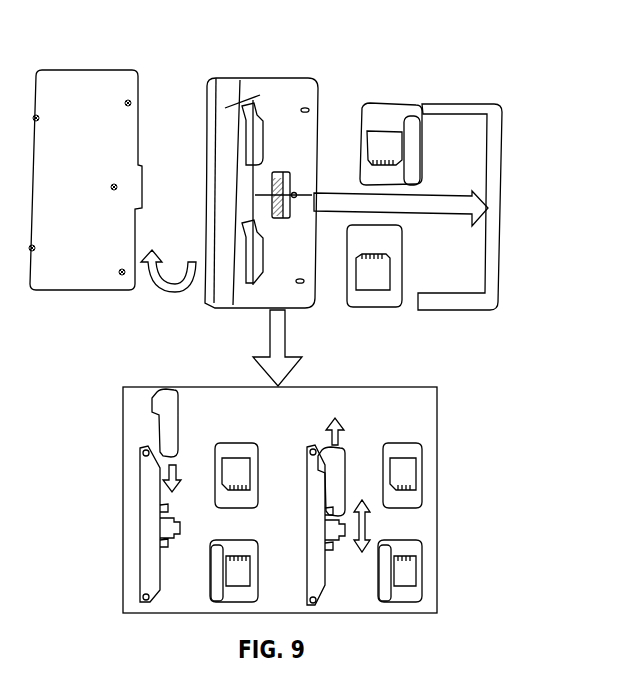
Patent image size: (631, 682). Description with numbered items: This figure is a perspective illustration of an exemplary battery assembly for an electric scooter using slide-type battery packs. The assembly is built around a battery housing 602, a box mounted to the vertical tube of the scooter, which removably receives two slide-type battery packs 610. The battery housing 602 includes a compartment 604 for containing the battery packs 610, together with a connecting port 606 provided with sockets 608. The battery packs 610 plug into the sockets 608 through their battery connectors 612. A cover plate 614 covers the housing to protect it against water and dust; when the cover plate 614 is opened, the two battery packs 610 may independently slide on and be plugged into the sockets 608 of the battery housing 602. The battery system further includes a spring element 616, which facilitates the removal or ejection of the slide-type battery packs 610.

The battery housing 602 is at (100, 270).
The compartment 604 is at (262, 95).
The connecting port 606 is at (225, 108).
The sockets 608 is at (262, 124).
The battery packs 610 is at (418, 124).
The battery connectors 612 is at (380, 267).
The cover plate 614 is at (488, 277).
The spring element 616 is at (275, 218).